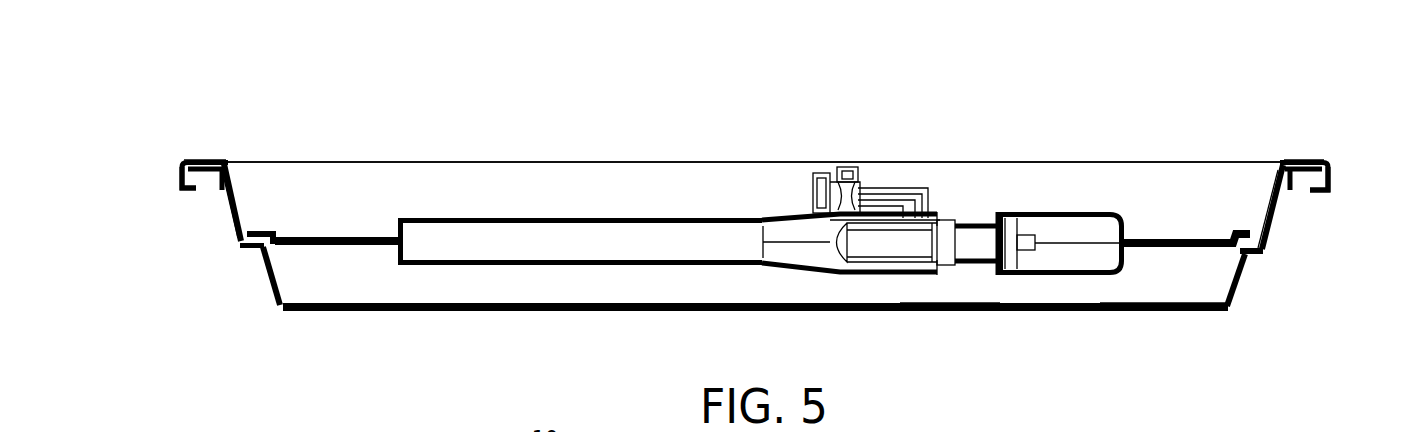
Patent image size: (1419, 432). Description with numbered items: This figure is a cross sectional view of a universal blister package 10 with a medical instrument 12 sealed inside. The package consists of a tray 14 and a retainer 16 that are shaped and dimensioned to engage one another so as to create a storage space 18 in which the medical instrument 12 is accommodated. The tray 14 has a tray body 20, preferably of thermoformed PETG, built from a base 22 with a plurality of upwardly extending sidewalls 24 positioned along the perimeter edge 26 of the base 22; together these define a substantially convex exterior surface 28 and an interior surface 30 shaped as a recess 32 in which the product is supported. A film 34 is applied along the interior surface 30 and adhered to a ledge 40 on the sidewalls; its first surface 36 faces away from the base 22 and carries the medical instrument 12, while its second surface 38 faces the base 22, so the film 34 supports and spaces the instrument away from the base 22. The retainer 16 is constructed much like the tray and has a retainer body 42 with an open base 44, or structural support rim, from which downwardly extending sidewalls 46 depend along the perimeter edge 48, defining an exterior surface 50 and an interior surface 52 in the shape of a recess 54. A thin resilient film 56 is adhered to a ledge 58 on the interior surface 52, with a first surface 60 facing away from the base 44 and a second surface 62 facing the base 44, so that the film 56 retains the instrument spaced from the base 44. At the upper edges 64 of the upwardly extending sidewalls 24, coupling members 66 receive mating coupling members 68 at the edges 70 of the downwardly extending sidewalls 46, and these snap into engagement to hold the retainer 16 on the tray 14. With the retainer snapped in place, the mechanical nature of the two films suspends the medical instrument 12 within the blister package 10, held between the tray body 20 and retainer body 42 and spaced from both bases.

The universal blister package 10 is at (600, 132).
The medical instrument 12 is at (682, 237).
The tray 14 is at (340, 312).
The retainer 16 is at (202, 162).
The storage space 18 is at (398, 230).
The tray body 20 is at (1053, 312).
The base 22 is at (680, 312).
The upwardly extending sidewalls 24 is at (268, 278).
The perimeter edge 26 is at (280, 307).
The exterior surface 28 is at (1240, 282).
The interior surface 30 is at (1218, 276).
The recess 32 is at (952, 295).
The film 34 is at (386, 253).
The first surface 36 is at (498, 262).
The second surface 38 is at (580, 262).
The ledge 40 is at (248, 250).
The retainer body 42 is at (1298, 162).
The open base 44 is at (215, 162).
The downwardly extending sidewalls 46 is at (240, 200).
The perimeter edge 48 is at (1290, 178).
The exterior surface 50 is at (1280, 218).
The interior surface 52 is at (1258, 212).
The recess 54 is at (1128, 222).
The thin resilient film 56 is at (1026, 212).
The ledge 58 is at (1250, 253).
The first surface 60 is at (1072, 222).
The second surface 62 is at (505, 220).
The upper edges 64 is at (205, 190).
The coupling members 66 is at (217, 185).
The mating coupling members 68 is at (1318, 164).
The edges 70 is at (190, 160).